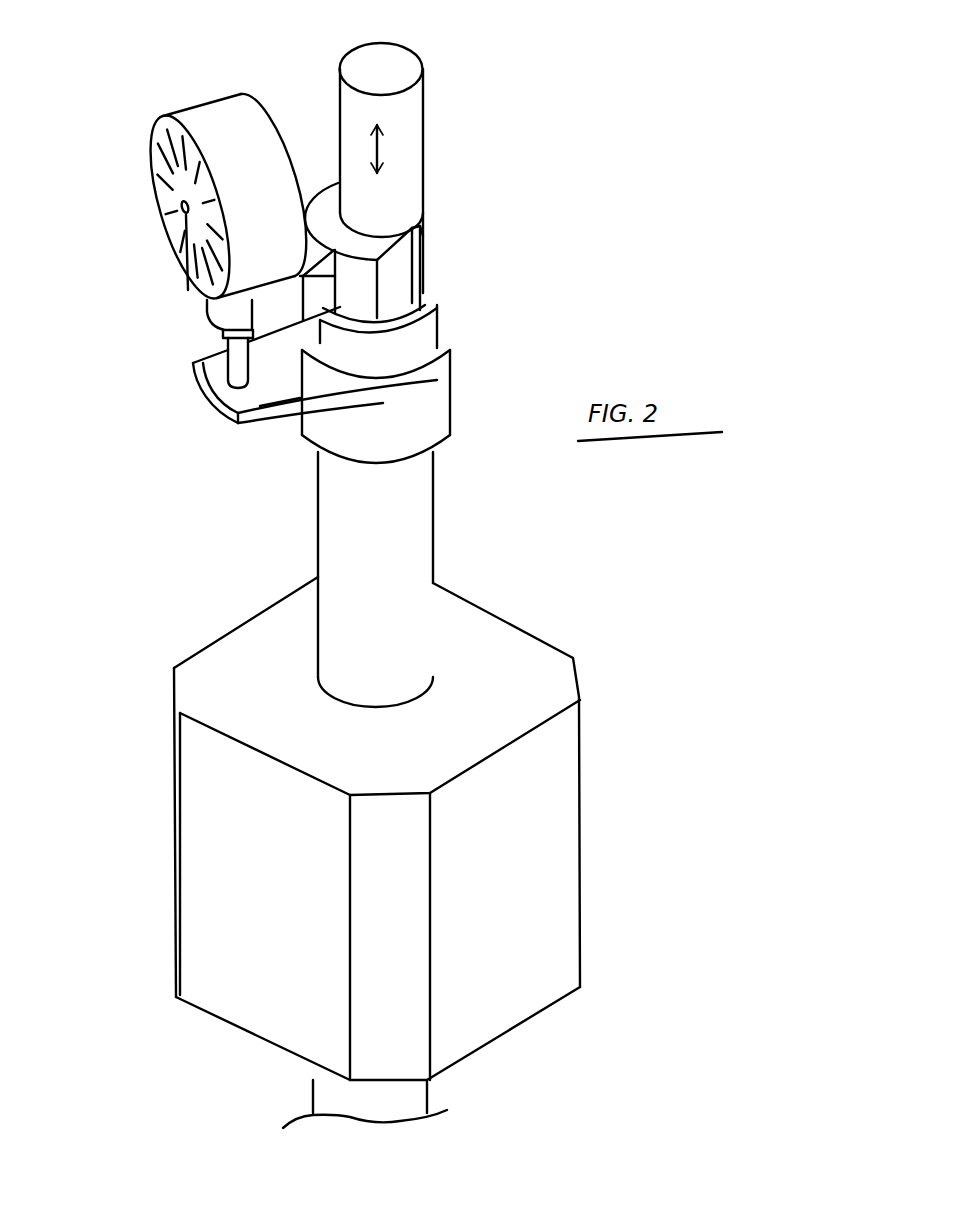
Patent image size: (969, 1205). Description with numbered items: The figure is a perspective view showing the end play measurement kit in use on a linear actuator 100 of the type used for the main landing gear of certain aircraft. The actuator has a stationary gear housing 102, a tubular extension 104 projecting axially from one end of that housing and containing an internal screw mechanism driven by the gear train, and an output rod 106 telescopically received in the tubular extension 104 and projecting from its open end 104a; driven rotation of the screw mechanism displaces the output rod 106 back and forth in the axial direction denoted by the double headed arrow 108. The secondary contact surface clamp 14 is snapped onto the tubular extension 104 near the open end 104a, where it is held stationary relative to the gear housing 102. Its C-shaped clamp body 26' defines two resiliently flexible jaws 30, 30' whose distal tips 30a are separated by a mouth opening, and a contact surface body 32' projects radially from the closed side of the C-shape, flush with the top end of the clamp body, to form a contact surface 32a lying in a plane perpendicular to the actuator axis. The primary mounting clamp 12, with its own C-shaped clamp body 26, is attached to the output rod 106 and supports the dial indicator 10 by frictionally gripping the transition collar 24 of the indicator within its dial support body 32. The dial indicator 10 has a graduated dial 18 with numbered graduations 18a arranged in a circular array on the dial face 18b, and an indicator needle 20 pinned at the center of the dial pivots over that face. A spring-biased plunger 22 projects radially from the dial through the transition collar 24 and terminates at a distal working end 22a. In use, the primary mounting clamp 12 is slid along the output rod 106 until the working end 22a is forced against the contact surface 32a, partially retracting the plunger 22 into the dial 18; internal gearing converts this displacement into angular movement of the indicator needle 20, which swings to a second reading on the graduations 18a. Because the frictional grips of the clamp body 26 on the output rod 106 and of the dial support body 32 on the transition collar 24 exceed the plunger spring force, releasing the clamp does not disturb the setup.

The dial indicator 10 is at (122, 113).
The primary mounting clamp 12 is at (205, 318).
The secondary contact surface clamp 14 is at (462, 358).
The graduated dial 18 is at (227, 115).
The graduations 18a is at (150, 140).
The dial face 18b is at (173, 217).
The indicator needle 20 is at (175, 262).
The plunger 22 is at (212, 362).
The distal working end 22a is at (237, 387).
The transition collar 24 is at (226, 343).
The clamp body 26 is at (419, 265).
The clamp body 26' is at (474, 392).
The jaw 30 is at (386, 221).
The lower clamp ring 30' is at (404, 444).
The distal tip 30a is at (421, 248).
The dial support body 32 is at (310, 313).
The contact surface body 32' is at (294, 453).
The contact surface 32a is at (288, 392).
The linear actuator 100 is at (672, 720).
The gear housing 102 is at (563, 810).
The tubular extension 104 is at (420, 553).
The open end 104a is at (423, 300).
The output rod 106 is at (410, 163).
The double headed arrow 108 is at (380, 148).